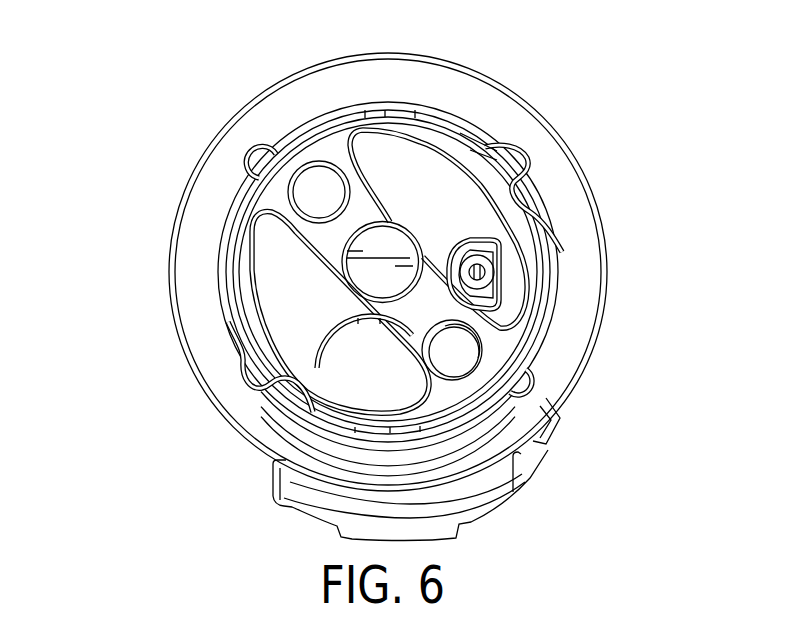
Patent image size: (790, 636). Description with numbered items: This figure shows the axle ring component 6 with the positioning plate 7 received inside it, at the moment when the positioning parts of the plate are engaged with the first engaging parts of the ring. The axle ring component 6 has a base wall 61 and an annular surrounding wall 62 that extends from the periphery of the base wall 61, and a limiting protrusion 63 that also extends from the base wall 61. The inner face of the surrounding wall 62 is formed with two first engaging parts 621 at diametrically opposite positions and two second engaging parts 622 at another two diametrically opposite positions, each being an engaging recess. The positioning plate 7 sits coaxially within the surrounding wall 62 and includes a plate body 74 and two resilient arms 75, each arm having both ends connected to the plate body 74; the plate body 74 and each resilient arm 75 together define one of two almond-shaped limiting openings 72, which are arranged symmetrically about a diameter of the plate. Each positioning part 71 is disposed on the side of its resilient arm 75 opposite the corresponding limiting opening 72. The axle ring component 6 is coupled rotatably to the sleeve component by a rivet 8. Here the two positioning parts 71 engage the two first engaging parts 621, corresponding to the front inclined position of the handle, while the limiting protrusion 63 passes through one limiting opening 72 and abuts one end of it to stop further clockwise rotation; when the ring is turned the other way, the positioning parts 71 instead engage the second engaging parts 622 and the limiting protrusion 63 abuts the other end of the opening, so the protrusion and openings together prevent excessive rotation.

The axle ring component 6 is at (157, 340).
The positioning plate 7 is at (327, 148).
The rivet 8 is at (425, 258).
The base wall 61 is at (275, 277).
The annular surrounding wall 62 is at (208, 203).
The limiting protrusion 63 is at (500, 287).
The positioning part 71 is at (510, 165).
The limiting opening 72 is at (523, 183).
The plate body 74 is at (423, 313).
The resilient arm 75 is at (341, 370).
The first engaging part 621 is at (483, 220).
The second engaging part 622 is at (252, 150).